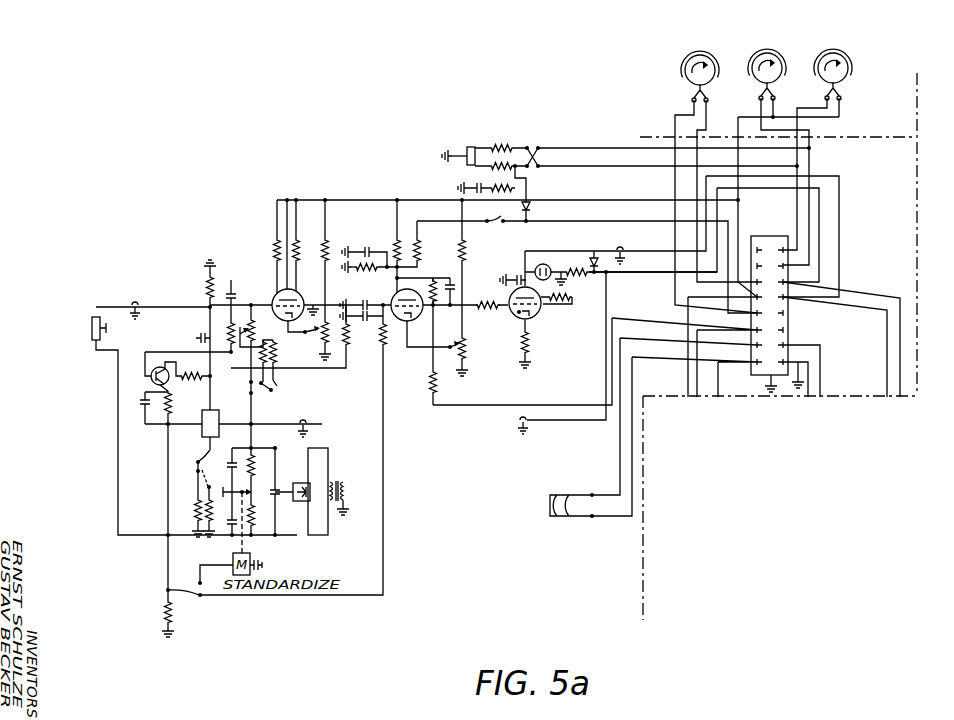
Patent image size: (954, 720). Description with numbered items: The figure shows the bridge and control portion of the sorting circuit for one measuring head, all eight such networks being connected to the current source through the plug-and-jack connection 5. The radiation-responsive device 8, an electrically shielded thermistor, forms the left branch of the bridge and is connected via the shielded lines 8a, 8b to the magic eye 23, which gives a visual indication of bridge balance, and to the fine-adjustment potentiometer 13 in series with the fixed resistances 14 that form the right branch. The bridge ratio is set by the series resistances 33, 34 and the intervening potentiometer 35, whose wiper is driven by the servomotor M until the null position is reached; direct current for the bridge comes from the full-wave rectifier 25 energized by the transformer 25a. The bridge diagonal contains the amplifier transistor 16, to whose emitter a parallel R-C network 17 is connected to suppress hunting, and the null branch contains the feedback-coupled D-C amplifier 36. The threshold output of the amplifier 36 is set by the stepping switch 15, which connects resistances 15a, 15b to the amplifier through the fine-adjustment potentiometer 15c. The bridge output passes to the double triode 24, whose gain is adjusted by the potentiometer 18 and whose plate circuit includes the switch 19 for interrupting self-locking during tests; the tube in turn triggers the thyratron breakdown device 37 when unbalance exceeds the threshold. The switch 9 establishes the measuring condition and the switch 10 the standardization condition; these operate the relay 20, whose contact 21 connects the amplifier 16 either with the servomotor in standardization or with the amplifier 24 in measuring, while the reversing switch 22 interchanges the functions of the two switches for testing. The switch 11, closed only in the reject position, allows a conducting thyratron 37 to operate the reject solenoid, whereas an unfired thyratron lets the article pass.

The plug-and-jack connection 5 is at (757, 374).
The radiation-responsive device 8 is at (92, 334).
The electrically shielded line 8a is at (176, 302).
The electrically shielded line 8b is at (243, 305).
The switch 9 is at (862, 87).
The switch 10 is at (748, 98).
The switch 11 is at (688, 90).
The fine-adjustment potentiometer 13 is at (259, 348).
The fixed resistances 14 is at (274, 390).
The stepping switch 15 is at (222, 480).
The resistance 15a is at (192, 505).
The resistance 15b is at (215, 517).
The fine-adjustment potentiometer 15c is at (208, 451).
The amplifier transistor 16 is at (151, 378).
The parallel R-C network 17 is at (154, 408).
The potentiometer 18 is at (475, 356).
The switch 19 is at (495, 216).
The relay 20 is at (474, 147).
The contact 21 is at (190, 600).
The reversing switch 22 is at (532, 148).
The magic eye 23 is at (297, 300).
The double triode 24 is at (397, 323).
The full-wave rectifier 25 is at (314, 491).
The transformer 25a is at (346, 491).
The resistance 33 is at (253, 476).
The resistance 34 is at (253, 524).
The potentiometer 35 is at (238, 486).
The feedback-coupled D-C amplifier 36 is at (219, 418).
The thyratron breakdown device 37 is at (540, 311).